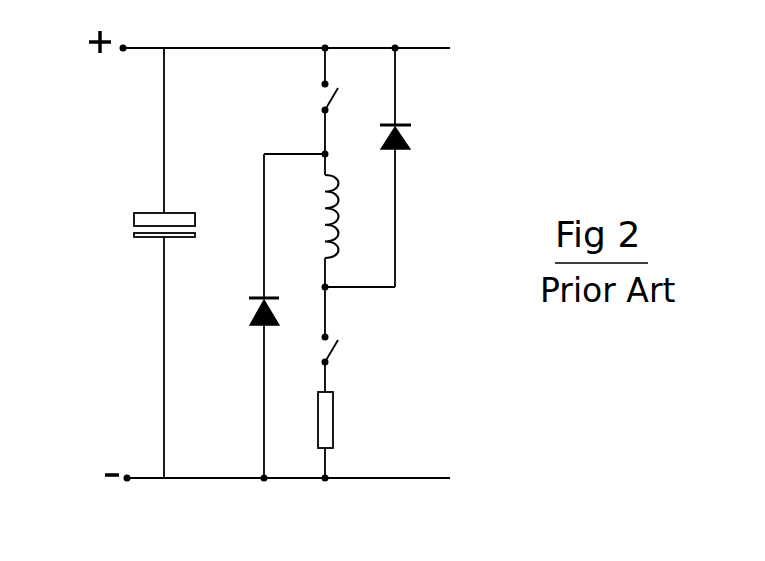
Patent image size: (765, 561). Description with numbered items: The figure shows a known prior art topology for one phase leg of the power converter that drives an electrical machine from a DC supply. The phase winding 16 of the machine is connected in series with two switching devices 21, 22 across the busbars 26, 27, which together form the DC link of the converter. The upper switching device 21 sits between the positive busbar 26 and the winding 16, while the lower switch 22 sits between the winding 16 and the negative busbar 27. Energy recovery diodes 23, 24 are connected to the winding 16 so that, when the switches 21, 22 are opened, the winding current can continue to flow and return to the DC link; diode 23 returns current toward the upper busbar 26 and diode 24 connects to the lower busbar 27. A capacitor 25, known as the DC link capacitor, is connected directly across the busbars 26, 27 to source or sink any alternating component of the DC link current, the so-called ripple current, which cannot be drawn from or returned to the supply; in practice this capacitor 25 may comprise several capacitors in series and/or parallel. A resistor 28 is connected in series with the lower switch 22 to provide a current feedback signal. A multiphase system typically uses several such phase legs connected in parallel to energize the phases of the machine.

The phase winding 16 is at (342, 198).
The switching device 21 is at (320, 100).
The lower switch 22 is at (336, 349).
The energy recovery diode 23 is at (414, 134).
The energy recovery diode 24 is at (248, 304).
The DC link capacitor 25 is at (132, 228).
The busbar 26 is at (238, 48).
The busbar 27 is at (220, 478).
The resistor 28 is at (334, 418).